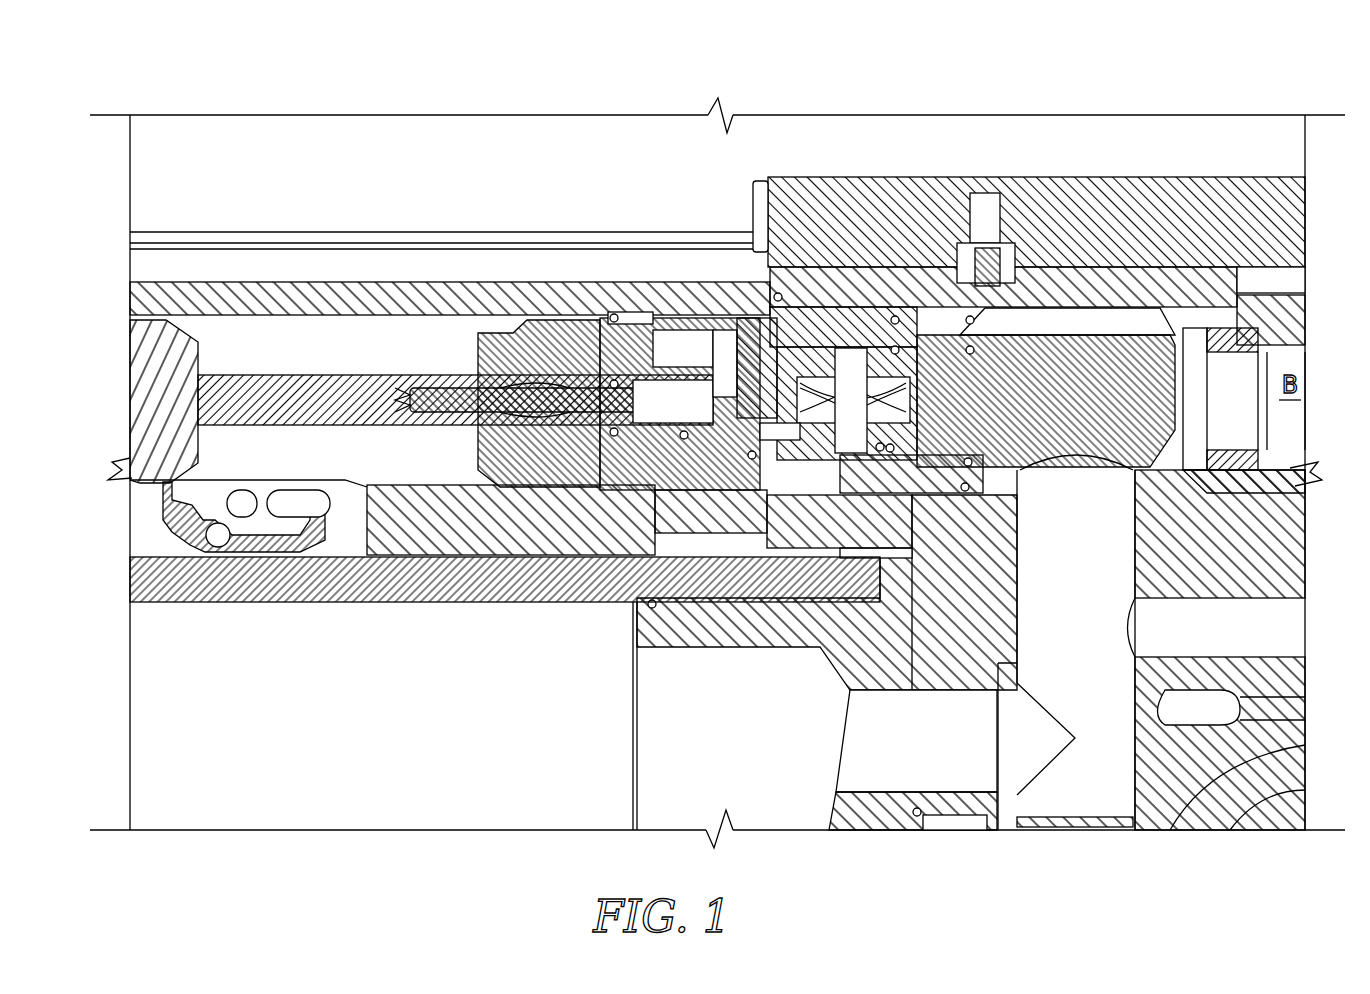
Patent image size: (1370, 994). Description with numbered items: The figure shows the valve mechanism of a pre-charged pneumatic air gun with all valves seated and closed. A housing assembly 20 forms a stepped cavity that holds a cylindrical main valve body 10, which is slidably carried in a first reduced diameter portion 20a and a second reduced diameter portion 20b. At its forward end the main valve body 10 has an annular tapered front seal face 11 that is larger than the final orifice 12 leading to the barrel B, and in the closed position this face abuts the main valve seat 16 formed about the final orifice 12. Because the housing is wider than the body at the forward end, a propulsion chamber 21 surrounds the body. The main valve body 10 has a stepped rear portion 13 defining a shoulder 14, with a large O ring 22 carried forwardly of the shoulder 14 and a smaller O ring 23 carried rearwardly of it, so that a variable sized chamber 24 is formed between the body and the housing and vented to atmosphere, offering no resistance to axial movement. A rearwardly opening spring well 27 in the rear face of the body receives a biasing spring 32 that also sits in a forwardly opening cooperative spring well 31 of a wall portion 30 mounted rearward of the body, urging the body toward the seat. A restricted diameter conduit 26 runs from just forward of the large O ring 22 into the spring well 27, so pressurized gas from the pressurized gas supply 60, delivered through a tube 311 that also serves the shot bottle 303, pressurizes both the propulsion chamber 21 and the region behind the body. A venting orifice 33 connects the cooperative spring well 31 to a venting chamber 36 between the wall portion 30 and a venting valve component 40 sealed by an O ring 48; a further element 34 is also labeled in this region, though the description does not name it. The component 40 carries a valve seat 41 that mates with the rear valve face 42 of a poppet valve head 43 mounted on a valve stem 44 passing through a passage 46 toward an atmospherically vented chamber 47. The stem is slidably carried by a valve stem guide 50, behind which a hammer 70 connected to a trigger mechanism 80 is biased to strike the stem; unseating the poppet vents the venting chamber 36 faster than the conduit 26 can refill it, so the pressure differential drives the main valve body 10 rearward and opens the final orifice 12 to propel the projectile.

The main valve body 10 is at (1195, 280).
The front seal face 11 is at (1250, 290).
The final orifice 12 is at (1180, 395).
The stepped rear portion 13 is at (1008, 485).
The shoulder 14 is at (1085, 320).
The main valve seat 16 is at (1155, 482).
The housing assembly 20 is at (1220, 215).
The first reduced diameter portion 20a is at (1015, 300).
The second reduced diameter portion 20b is at (775, 215).
The propulsion chamber 21 is at (1130, 300).
The large O ring 22 is at (1115, 345).
The smaller O ring 23 is at (985, 232).
The variable sized chamber 24 is at (975, 285).
The restricted diameter conduit 26 is at (1018, 555).
The rearwardly opening spring well 27 is at (908, 445).
The wall portion 30 is at (860, 345).
The cooperative spring well 31 is at (873, 432).
The biasing spring 32 is at (895, 340).
The venting orifice 33 is at (776, 425).
The seal ring 34 is at (888, 452).
The venting chamber 36 is at (752, 440).
The venting valve component 40 is at (683, 372).
The valve seat 41 is at (740, 470).
The rear valve face 42 is at (748, 352).
The poppet valve head 43 is at (798, 352).
The valve stem 44 is at (578, 335).
The passage 46 is at (667, 380).
The atmospherically vented chamber 47 is at (643, 383).
The O ring 48 is at (668, 445).
The valve stem guide 50 is at (545, 462).
The pressurized gas supply 60 is at (1063, 783).
The hammer 70 is at (157, 407).
The trigger mechanism 80 is at (262, 552).
The shot bottle 303 is at (660, 803).
The tube 311 is at (1265, 622).